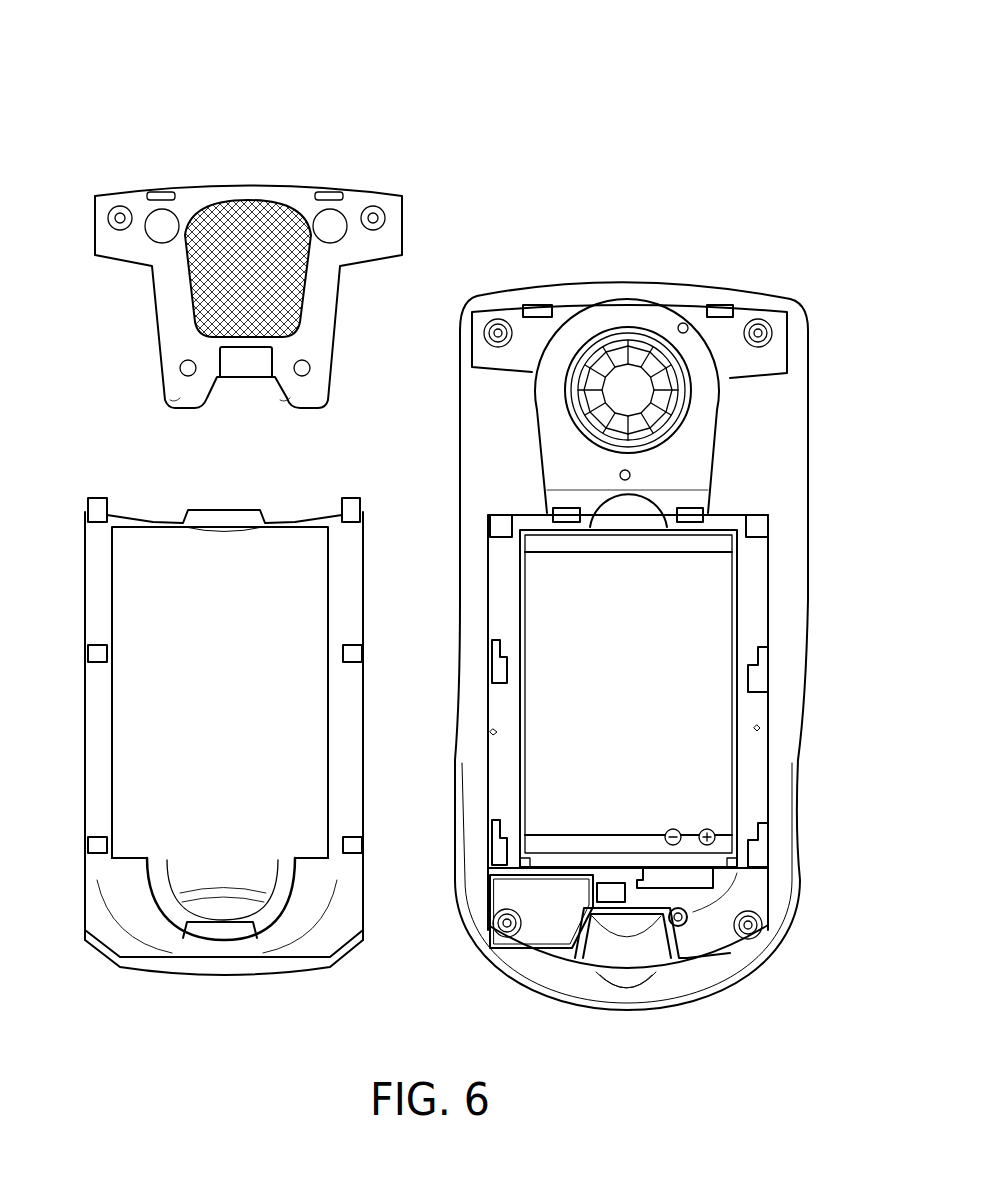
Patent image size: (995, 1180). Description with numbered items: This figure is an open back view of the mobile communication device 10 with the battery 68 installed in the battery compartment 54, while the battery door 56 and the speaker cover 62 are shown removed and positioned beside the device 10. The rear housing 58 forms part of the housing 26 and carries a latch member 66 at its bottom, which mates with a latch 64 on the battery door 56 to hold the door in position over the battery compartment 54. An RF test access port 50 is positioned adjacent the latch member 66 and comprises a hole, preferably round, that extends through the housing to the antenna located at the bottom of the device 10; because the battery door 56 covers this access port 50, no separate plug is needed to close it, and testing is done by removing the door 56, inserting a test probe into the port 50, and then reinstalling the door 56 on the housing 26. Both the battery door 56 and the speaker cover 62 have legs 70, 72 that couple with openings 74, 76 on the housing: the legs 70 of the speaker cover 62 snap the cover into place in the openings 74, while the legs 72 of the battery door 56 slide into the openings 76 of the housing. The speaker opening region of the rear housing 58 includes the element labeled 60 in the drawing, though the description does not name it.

The mobile communication device 10 is at (763, 79).
The housing 26 is at (812, 361).
The RF test access port 50 is at (687, 923).
The battery compartment 54 is at (735, 598).
The battery door 56 is at (130, 923).
The rear housing 58 is at (808, 418).
The speaker 60 is at (637, 340).
The speaker cover 62 is at (390, 246).
The latch 64 is at (227, 938).
The latch member 66 is at (643, 927).
The battery 68 is at (664, 743).
The legs of speaker cover 70 is at (168, 190).
The legs of battery door 72 is at (100, 497).
The openings 74 is at (537, 305).
The openings 76 is at (490, 530).